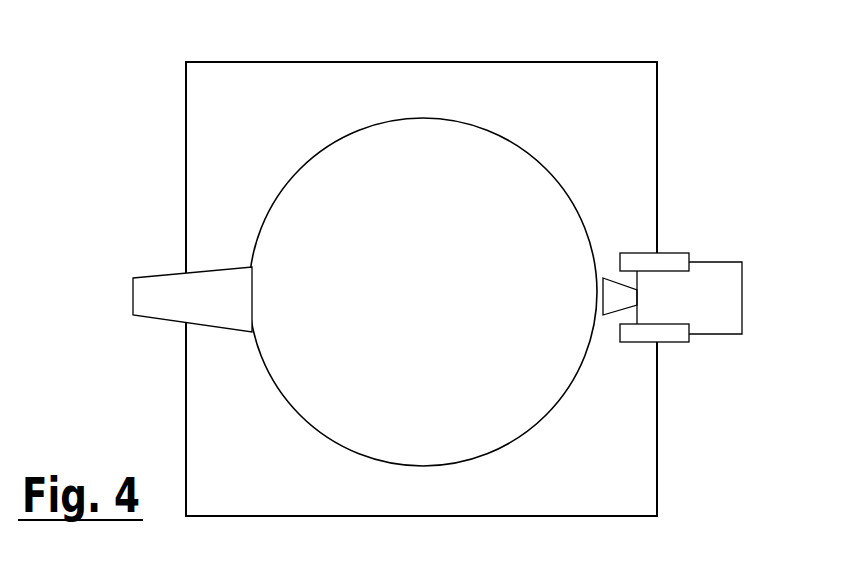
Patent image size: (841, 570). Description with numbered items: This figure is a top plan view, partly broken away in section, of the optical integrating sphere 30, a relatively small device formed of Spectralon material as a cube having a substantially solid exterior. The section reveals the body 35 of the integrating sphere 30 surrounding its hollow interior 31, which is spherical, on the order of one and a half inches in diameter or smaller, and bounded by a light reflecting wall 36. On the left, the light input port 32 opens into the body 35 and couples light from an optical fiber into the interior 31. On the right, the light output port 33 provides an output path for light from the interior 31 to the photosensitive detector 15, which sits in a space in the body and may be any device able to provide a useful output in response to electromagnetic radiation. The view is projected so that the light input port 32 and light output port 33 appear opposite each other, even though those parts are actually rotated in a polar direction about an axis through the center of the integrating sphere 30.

The optical integrating sphere 30 is at (186, 103).
The body 35 is at (285, 80).
The interior 31 is at (357, 180).
The light reflecting wall 36 is at (270, 219).
The light input port 32 is at (158, 277).
The light output port 33 is at (615, 299).
The photosensitive detector 15 is at (715, 282).